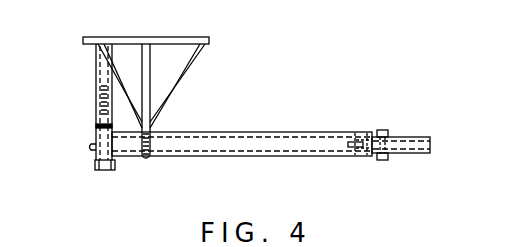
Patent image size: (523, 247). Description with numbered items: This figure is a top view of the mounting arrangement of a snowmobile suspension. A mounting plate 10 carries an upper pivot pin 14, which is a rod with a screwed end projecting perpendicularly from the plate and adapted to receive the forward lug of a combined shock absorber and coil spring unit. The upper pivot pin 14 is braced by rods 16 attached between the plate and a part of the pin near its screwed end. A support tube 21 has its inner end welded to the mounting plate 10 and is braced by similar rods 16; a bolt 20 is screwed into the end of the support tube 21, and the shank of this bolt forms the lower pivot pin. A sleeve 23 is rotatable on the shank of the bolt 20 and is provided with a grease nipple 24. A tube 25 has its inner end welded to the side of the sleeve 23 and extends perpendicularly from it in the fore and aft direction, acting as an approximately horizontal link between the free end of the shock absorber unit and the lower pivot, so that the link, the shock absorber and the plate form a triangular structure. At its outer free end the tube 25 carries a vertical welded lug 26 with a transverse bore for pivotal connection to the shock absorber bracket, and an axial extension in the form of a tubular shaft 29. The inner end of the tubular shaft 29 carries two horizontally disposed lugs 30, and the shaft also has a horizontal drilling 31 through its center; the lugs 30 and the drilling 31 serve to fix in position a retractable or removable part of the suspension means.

The mounting plate 10 is at (158, 41).
The upper pivot pin 14 is at (146, 88).
The bracing rods 16 is at (97, 67).
The bolt 20 is at (97, 167).
The support tube 21 is at (97, 101).
The sleeve 23 is at (97, 126).
The grease nipple 24 is at (90, 148).
The tube 25 is at (213, 157).
The vertical welded lug 26 is at (350, 148).
The tubular shaft 29 is at (410, 154).
The horizontally disposed lugs 30 is at (382, 131).
The horizontal drilling 31 is at (398, 137).